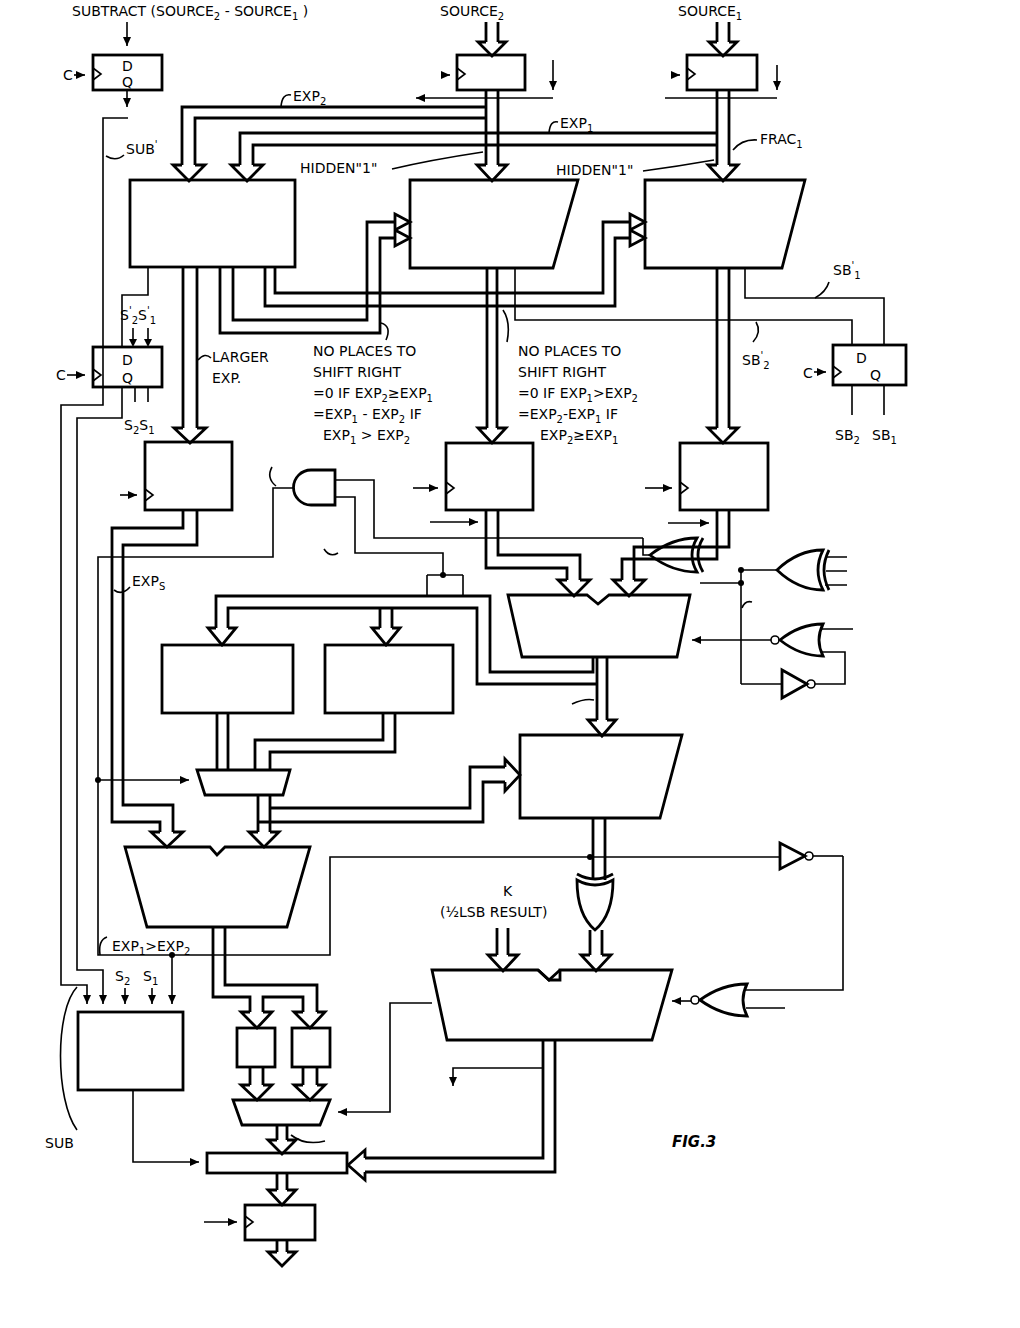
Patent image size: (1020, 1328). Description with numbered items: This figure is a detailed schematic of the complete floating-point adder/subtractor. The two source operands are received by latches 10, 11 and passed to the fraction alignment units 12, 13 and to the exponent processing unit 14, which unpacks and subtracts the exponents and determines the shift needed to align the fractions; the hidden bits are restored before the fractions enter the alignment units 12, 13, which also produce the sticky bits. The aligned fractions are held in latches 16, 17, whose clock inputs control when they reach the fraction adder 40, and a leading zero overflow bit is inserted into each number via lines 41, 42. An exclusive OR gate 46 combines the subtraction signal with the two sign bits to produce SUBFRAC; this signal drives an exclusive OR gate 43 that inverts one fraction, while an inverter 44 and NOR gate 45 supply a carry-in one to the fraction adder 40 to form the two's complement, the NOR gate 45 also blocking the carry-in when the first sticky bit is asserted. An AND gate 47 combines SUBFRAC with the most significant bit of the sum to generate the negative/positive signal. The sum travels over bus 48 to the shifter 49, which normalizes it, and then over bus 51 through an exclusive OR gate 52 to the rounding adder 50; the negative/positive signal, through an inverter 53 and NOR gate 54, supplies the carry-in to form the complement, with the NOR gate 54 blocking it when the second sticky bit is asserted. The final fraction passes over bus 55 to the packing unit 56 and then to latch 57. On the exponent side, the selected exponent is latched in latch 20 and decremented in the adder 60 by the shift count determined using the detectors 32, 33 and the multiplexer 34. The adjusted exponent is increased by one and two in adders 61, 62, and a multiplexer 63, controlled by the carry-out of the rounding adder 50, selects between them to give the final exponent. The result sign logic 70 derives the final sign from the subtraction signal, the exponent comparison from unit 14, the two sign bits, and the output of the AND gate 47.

The latch 10 is at (758, 58).
The latch 11 is at (516, 56).
The fraction alignment unit 12 is at (793, 231).
The fraction alignment unit 13 is at (560, 224).
The exponent processing unit 14 is at (296, 226).
The latch 16 is at (770, 480).
The latch 17 is at (533, 487).
The latch 20 is at (233, 472).
The leading zeros detector 32 is at (250, 645).
The leading ones detector 33 is at (352, 645).
The multiplexer 34 is at (228, 800).
The fraction adder 40 is at (632, 657).
The line 41 is at (635, 481).
The line 42 is at (450, 572).
The exclusive OR gate 43 is at (650, 542).
The inverter 44 is at (800, 700).
The NOR gate 45 is at (776, 652).
The exclusive OR gate 46 is at (795, 555).
The AND gate 47 is at (439, 702).
The bus 48 is at (609, 702).
The shifter 49 is at (673, 779).
The rounding adder 50 is at (625, 968).
The bus 51 is at (612, 851).
The exclusive OR gate 52 is at (614, 905).
The inverter 53 is at (792, 850).
The NOR gate 54 is at (722, 986).
The bus 55 is at (556, 1088).
The packing unit 56 is at (205, 1173).
The latch 57 is at (316, 1223).
The adder 60 is at (288, 905).
The adder 61 is at (330, 1030).
The adder 62 is at (237, 1030).
The multiplexer 63 is at (235, 1116).
The result sign logic 70 is at (183, 1052).